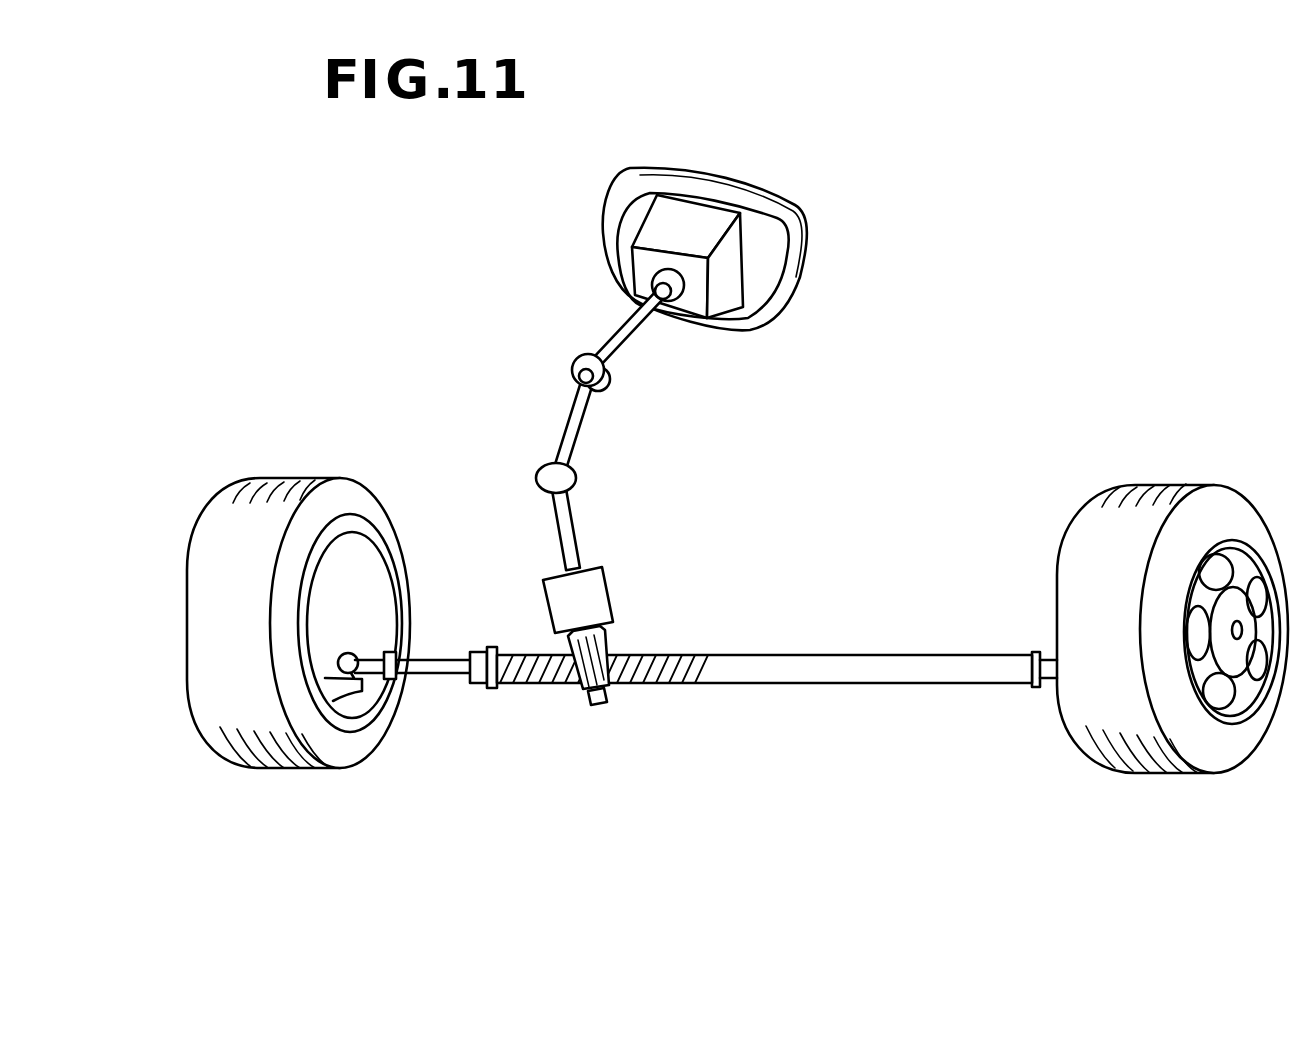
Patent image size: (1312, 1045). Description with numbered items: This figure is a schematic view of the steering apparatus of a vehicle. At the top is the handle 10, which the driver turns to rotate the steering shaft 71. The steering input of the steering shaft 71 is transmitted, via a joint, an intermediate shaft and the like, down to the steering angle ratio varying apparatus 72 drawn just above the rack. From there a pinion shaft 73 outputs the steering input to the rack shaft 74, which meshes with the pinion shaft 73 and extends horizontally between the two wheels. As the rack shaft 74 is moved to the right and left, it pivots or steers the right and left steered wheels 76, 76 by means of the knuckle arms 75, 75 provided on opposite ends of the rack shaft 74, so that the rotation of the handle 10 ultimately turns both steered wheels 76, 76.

The handle 10 is at (748, 150).
The steering shaft 71 is at (630, 335).
The steering angle ratio varying apparatus 72 is at (612, 574).
The pinion shaft 73 is at (582, 678).
The rack shaft 74 is at (677, 672).
The knuckle arm 75 is at (357, 660).
The steered wheel 76 is at (270, 515).